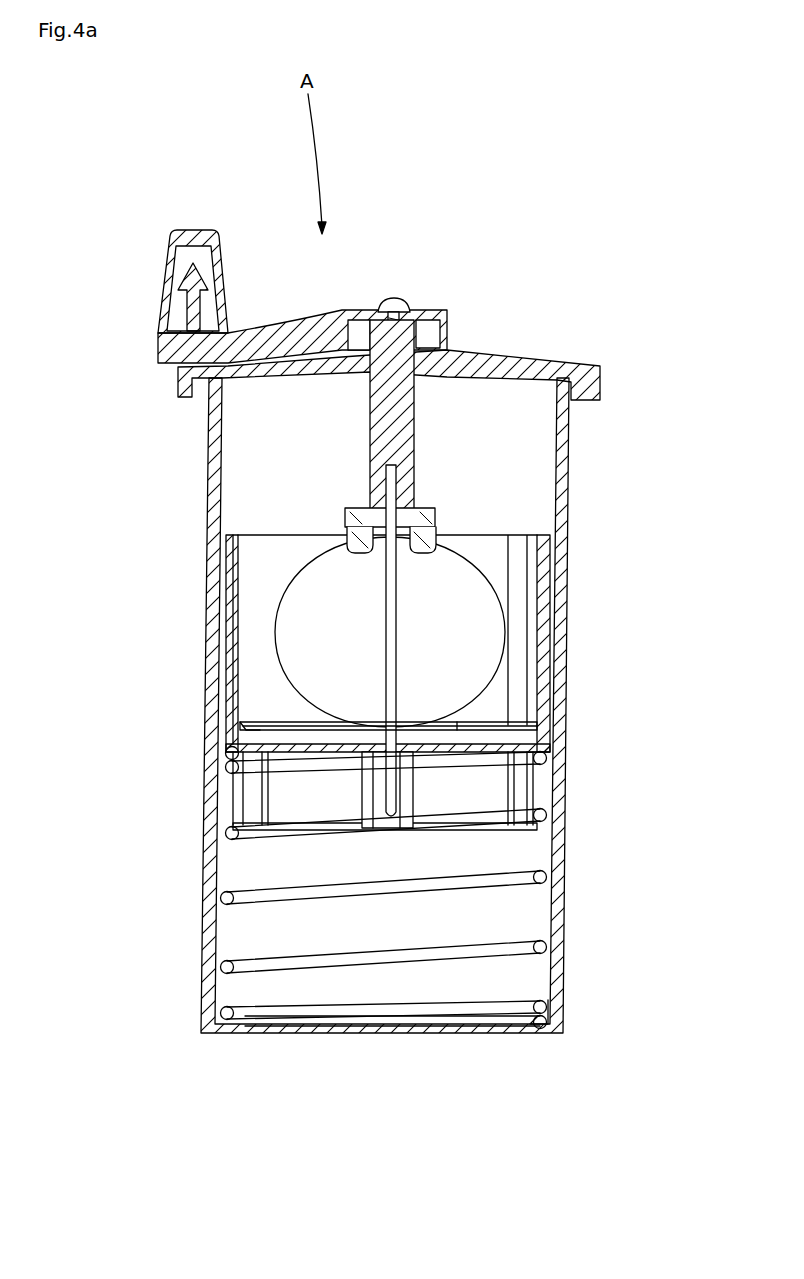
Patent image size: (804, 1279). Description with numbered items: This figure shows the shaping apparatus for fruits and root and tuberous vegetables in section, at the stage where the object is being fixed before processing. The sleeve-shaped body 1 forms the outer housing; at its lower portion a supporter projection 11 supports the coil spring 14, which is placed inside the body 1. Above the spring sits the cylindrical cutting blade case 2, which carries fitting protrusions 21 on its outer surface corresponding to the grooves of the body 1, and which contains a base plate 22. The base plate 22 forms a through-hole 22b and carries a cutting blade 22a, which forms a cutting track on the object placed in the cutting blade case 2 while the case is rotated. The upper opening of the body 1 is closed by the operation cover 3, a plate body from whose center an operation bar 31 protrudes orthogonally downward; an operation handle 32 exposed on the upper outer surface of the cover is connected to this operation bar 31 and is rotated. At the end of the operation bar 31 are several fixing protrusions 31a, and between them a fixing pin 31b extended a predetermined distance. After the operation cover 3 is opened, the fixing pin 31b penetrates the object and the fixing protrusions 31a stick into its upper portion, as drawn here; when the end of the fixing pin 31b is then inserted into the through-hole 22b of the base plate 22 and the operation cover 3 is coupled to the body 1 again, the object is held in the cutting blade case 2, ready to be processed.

The body 1 is at (570, 868).
The supporter projection 11 is at (542, 1032).
The coil spring 14 is at (546, 947).
The cutting blade case 2 is at (538, 580).
The fitting protrusions 21 is at (540, 790).
The base plate 22 is at (520, 722).
The cutting blade 22a is at (297, 720).
The through-hole 22b is at (457, 720).
The operation cover 3 is at (428, 307).
The operation bar 31 is at (403, 428).
The fixing protrusions 31a is at (433, 530).
The fixing pin 31b is at (397, 630).
The operation handle 32 is at (160, 273).